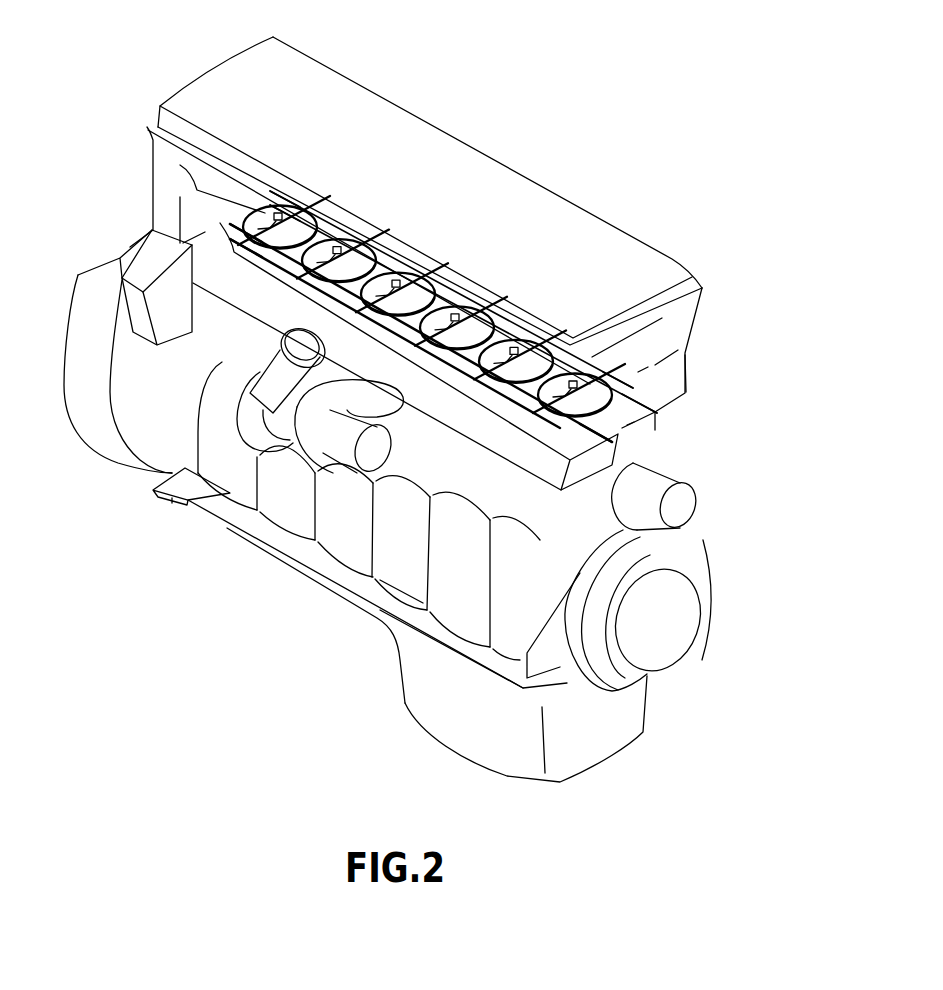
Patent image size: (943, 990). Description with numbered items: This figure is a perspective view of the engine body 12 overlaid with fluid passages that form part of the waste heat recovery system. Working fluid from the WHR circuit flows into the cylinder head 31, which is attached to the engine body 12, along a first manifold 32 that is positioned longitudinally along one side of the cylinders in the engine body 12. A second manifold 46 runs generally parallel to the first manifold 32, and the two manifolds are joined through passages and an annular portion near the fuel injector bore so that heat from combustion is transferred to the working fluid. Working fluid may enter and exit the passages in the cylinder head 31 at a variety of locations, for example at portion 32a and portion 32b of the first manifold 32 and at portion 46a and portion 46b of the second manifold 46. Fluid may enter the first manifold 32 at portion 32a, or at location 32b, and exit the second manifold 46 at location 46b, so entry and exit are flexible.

The engine body 12 is at (616, 152).
The cylinder head 31 is at (686, 391).
The first manifold 32 is at (585, 440).
The portion of first manifold 32a is at (230, 224).
The portion of first manifold 32b is at (612, 442).
The second manifold 46 is at (633, 389).
The portion of second manifold 46a is at (270, 189).
The portion of second manifold 46b is at (657, 413).